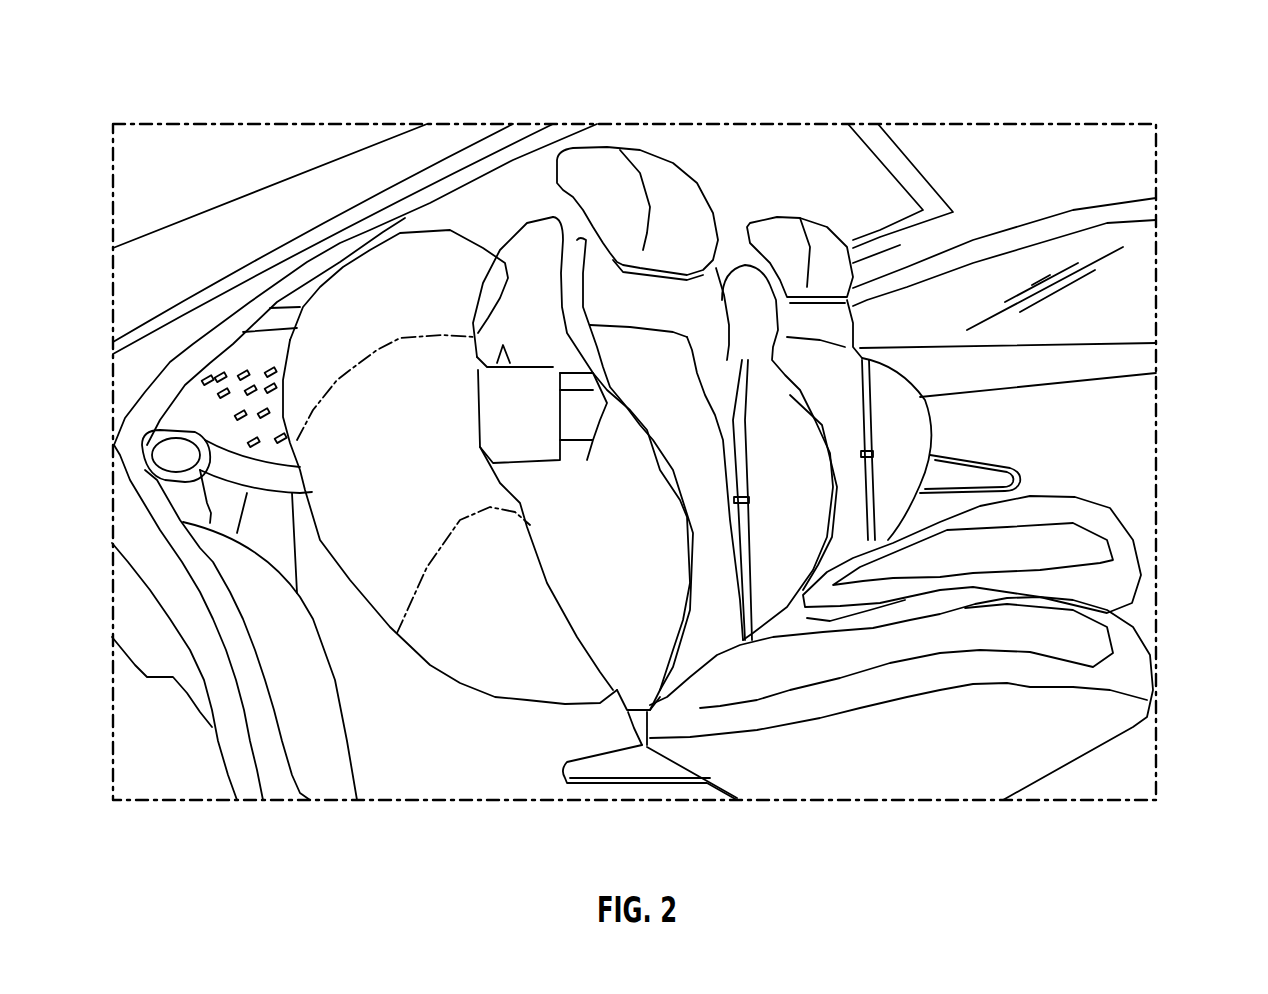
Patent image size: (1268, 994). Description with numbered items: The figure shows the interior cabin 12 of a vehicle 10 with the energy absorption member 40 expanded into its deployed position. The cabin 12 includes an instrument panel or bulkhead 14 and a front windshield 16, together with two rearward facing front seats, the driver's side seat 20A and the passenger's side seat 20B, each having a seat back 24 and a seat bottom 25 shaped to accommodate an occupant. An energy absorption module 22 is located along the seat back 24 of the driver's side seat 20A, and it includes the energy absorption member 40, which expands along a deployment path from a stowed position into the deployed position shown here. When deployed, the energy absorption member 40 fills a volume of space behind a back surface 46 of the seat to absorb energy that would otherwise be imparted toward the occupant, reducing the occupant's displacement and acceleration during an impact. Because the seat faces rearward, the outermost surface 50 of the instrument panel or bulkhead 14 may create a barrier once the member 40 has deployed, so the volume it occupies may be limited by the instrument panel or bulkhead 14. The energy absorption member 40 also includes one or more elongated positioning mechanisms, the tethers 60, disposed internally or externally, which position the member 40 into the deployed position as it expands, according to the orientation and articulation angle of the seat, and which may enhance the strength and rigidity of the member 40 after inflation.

The vehicle 10 is at (1197, 83).
The interior cabin 12 is at (1128, 248).
The instrument panel or bulkhead 14 is at (244, 380).
The front windshield 16 is at (525, 229).
The driver's side seat 20A is at (1060, 641).
The passenger's side seat 20B is at (1100, 552).
The energy absorption module 22 is at (597, 378).
The seat back 24 is at (752, 497).
The seat bottom 25 is at (936, 617).
The energy absorption member 40 is at (416, 484).
The back surface 46 is at (620, 700).
The outermost surface 50 is at (258, 480).
The tethers 60 is at (347, 373).